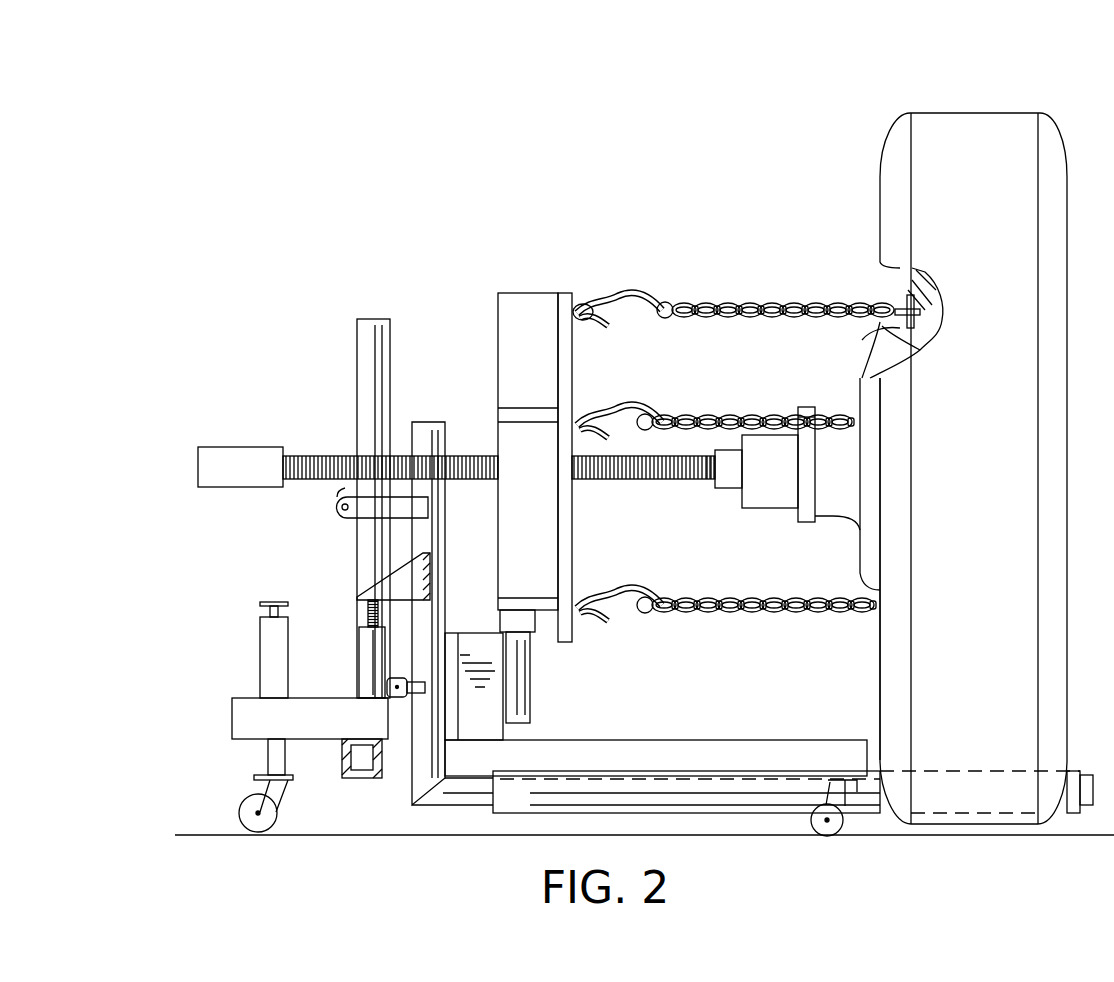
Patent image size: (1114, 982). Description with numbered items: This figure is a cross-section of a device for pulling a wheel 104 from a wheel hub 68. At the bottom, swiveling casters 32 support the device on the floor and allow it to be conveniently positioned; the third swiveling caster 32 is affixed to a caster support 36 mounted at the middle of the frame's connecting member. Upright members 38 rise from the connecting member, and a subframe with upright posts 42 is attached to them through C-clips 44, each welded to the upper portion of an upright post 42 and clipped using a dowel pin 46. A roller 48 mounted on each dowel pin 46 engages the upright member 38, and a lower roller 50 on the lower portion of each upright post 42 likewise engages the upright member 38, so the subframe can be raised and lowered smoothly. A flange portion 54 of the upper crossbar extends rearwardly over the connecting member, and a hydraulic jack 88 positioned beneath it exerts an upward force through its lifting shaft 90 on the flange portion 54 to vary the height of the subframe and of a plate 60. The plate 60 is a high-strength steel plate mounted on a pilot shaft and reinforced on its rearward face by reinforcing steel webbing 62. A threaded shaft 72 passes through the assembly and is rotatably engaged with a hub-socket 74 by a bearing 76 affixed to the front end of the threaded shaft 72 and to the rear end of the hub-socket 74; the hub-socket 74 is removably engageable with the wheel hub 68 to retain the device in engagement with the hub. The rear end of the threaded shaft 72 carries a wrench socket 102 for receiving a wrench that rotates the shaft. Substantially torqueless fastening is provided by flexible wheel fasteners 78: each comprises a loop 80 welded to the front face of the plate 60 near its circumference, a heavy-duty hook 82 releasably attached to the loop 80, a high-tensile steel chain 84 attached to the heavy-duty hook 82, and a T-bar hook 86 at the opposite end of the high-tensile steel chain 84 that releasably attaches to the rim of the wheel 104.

The swiveling caster 32 is at (284, 799).
The caster support 36 is at (232, 706).
The upright member 38 is at (357, 347).
The upright post 42 is at (424, 422).
The C-clip 44 is at (368, 520).
The dowel pin 46 is at (340, 507).
The roller 48 is at (340, 494).
The lower roller 50 is at (396, 682).
The flange portion 54 is at (357, 597).
The plate 60 is at (565, 642).
The reinforcing steel webbing 62 is at (498, 412).
The wheel hub 68 is at (833, 517).
The threaded shaft 72 is at (585, 482).
The hub-socket 74 is at (745, 508).
The bearing 76 is at (715, 492).
The flexible wheel fastener 78 is at (735, 449).
The loop 80 is at (573, 298).
The heavy-duty hook 82 is at (625, 290).
The high-tensile steel chain 84 is at (780, 302).
The T-bar hook 86 is at (938, 340).
The hydraulic jack 88 is at (357, 678).
The lifting shaft 90 is at (370, 612).
The wrench socket 102 is at (198, 456).
The wheel 104 is at (982, 113).